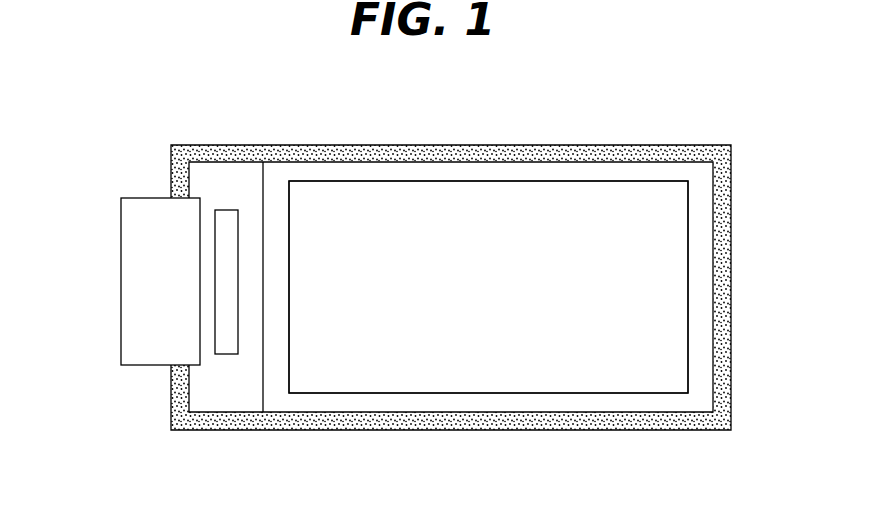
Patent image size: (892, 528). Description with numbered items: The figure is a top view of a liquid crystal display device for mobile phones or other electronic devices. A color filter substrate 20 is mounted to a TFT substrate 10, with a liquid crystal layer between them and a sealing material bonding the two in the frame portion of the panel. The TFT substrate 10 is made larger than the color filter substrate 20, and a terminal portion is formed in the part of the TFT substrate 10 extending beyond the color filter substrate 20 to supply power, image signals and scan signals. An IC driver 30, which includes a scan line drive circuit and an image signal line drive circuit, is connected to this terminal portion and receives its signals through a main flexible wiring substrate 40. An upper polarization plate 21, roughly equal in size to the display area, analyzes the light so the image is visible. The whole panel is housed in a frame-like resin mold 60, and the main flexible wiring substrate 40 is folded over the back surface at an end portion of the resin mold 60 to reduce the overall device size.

The TFT substrate 10 is at (221, 170).
The color filter substrate 20 is at (401, 172).
The upper polarization plate 21 is at (568, 195).
The IC driver 30 is at (225, 258).
The main flexible wiring substrate 40 is at (140, 282).
The resin mold 60 is at (233, 418).